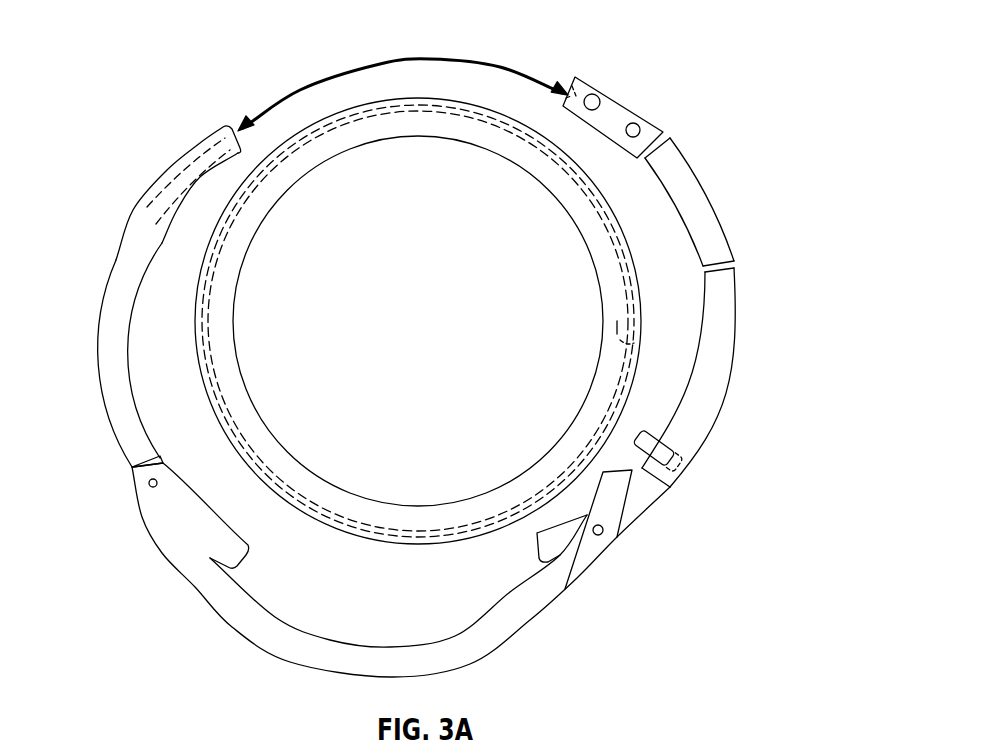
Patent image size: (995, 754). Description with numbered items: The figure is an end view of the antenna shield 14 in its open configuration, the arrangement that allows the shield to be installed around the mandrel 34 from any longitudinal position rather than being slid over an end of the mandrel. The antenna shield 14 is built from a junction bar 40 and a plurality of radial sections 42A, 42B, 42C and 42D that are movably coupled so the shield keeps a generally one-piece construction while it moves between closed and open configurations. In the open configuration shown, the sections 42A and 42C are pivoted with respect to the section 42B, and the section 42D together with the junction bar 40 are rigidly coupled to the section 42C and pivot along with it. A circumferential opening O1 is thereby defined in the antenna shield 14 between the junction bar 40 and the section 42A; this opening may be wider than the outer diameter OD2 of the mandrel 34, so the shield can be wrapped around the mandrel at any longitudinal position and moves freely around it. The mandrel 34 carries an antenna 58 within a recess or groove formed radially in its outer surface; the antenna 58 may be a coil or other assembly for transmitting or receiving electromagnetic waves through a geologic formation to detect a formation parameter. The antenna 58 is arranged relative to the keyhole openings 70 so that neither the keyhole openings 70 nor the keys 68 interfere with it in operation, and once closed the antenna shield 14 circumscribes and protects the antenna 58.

The antenna shield 14 is at (413, 372).
The mandrel 34 is at (510, 108).
The junction bar 40 is at (622, 98).
The radial section 42A is at (98, 328).
The radial section 42B is at (237, 633).
The radial section 42C is at (727, 397).
The radial section 42D is at (717, 207).
The antenna 58 is at (318, 130).
The key 68 is at (655, 428).
The keyhole opening 70 is at (617, 327).
The circumferential opening O1 is at (385, 62).
The outer diameter of the mandrel OD2 is at (198, 271).